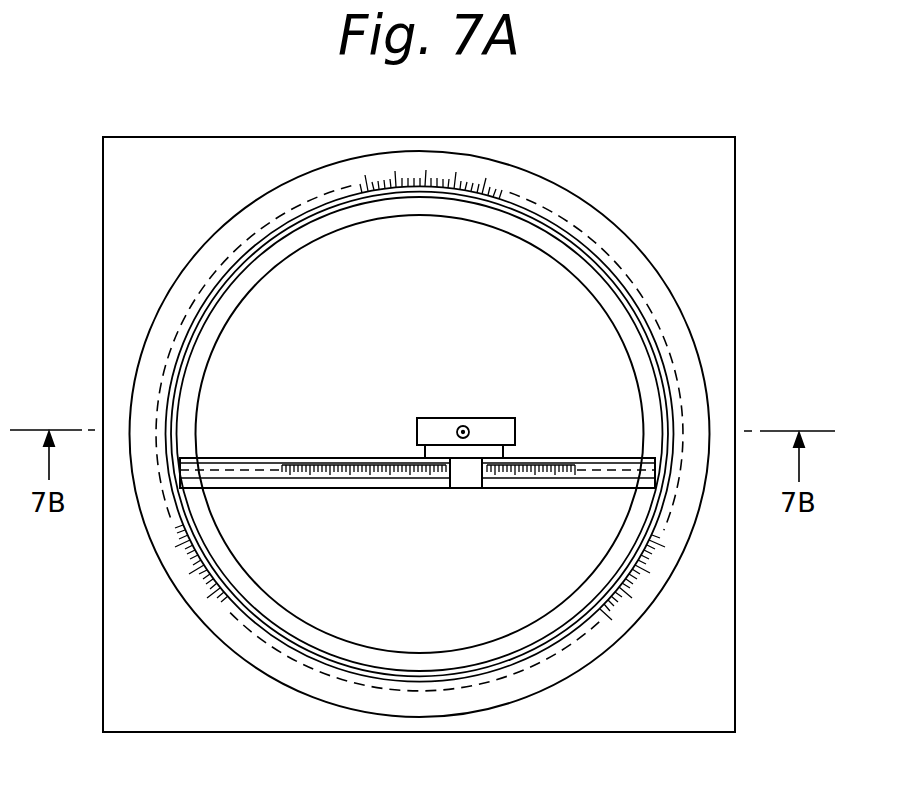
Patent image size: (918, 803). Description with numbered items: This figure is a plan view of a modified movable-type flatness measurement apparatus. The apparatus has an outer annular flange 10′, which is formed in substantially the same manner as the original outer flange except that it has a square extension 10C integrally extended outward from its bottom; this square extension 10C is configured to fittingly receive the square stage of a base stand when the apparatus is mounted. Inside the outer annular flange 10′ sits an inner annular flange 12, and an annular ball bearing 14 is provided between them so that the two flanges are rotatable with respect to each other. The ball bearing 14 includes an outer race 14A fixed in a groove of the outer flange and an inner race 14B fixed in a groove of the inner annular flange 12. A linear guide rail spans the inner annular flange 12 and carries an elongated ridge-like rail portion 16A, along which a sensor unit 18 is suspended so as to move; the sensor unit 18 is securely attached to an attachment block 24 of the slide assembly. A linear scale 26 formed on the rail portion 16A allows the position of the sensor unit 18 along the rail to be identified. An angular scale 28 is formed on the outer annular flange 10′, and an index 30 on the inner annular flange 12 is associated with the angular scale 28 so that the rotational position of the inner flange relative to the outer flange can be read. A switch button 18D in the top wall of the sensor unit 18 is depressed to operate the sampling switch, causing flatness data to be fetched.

The outer annular flange 10′ is at (700, 310).
The square extension 10C is at (635, 722).
The inner annular flange 12 is at (230, 337).
The annular ball bearing 14 is at (438, 665).
The outer race 14A is at (686, 410).
The inner race 14B is at (241, 603).
The ridge-like rail portion 16A is at (400, 477).
The sensor unit 18 is at (465, 412).
The switch button 18D is at (469, 428).
The attachment block 24 is at (465, 480).
The linear scale 26 is at (337, 452).
The angular scale 28 is at (452, 172).
The index 30 is at (180, 432).